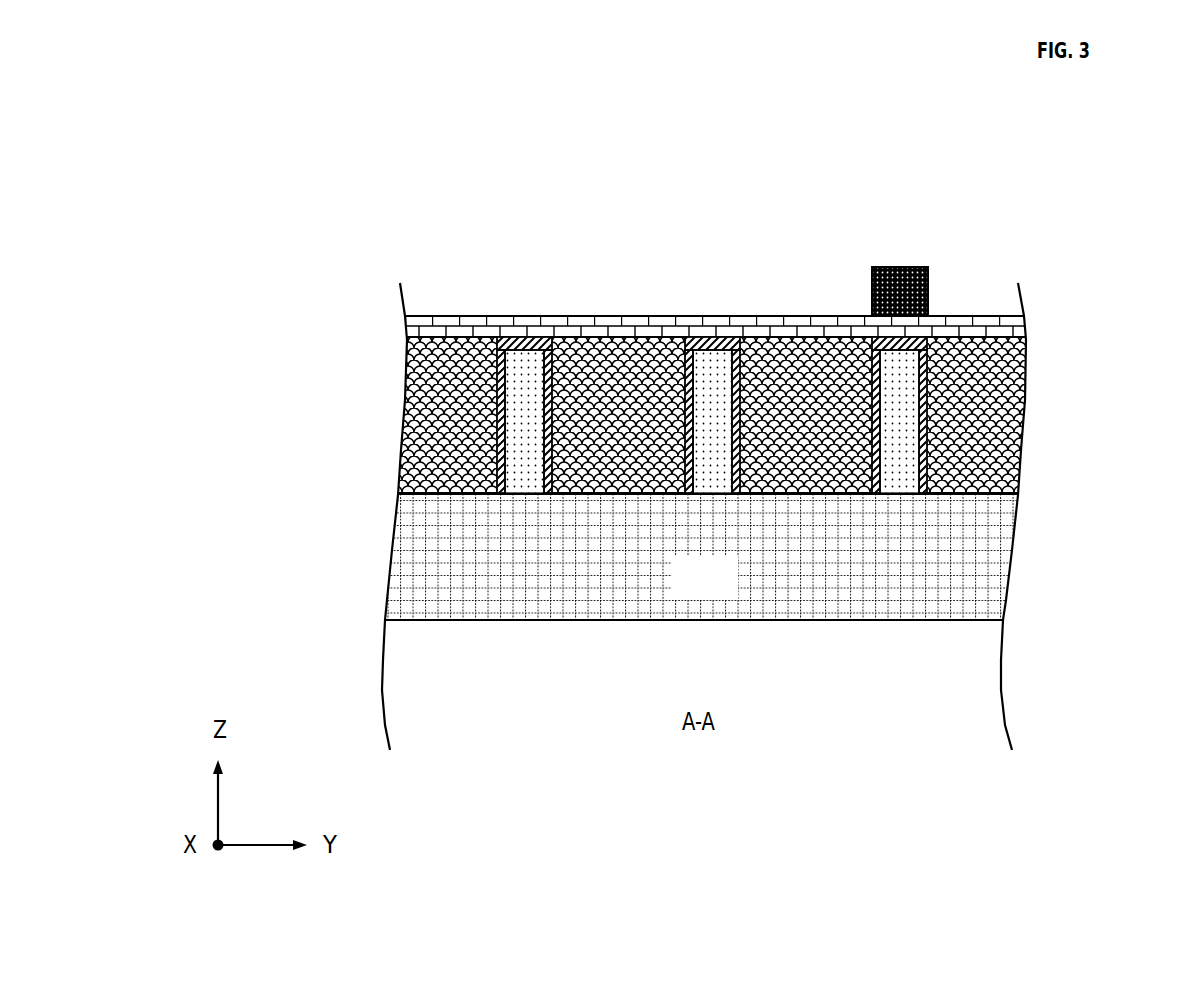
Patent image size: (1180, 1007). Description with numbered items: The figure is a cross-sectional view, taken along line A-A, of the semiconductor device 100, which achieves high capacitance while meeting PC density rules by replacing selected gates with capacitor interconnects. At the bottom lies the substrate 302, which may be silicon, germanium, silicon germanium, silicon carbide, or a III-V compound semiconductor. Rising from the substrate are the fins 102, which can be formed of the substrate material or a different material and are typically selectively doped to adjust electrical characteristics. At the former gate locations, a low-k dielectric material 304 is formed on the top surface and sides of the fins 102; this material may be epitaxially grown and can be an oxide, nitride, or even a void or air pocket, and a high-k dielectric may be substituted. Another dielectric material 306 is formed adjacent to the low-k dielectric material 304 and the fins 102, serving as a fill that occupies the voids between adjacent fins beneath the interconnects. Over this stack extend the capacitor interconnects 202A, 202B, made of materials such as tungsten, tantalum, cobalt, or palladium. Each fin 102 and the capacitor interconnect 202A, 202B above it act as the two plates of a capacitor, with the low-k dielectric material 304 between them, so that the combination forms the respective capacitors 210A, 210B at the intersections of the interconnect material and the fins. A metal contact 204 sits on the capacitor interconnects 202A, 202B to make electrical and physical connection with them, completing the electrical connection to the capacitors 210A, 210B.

The semiconductor device 100 is at (1131, 107).
The fins 102 is at (518, 360).
The capacitor interconnect 202A is at (710, 263).
The capacitor interconnect 202B is at (980, 325).
The metal contacts 204 is at (870, 284).
The capacitor 210A is at (714, 208).
The capacitor 210B is at (585, 209).
The substrate 302 is at (723, 592).
The low-k dielectric material 304 is at (708, 343).
The dielectric material 306 is at (438, 410).